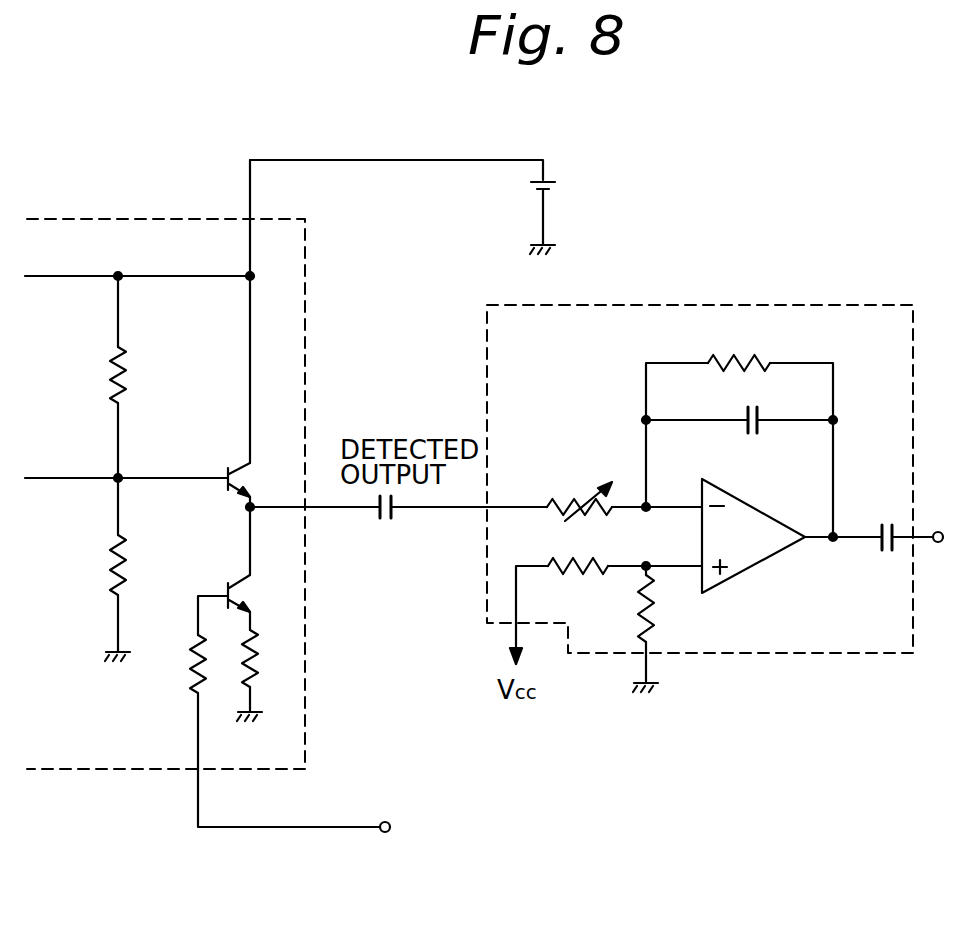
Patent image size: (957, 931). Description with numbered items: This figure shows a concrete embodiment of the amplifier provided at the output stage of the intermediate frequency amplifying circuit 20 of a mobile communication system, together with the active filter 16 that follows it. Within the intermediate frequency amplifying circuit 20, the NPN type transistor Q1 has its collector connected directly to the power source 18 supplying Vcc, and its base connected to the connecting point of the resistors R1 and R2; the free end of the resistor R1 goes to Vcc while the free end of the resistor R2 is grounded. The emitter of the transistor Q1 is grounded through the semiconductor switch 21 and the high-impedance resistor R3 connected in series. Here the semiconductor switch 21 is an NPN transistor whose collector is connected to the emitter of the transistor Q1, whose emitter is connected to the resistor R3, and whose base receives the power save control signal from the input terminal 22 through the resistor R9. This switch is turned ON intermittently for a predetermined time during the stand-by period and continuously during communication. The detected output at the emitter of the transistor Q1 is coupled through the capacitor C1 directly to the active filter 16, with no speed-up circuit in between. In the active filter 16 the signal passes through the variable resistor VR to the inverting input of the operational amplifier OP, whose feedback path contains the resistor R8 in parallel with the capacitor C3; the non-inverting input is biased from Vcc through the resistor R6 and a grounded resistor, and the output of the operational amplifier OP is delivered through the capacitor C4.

The active filter 16 is at (680, 305).
The power source 18 is at (550, 170).
The intermediate frequency amplifying circuit 20 is at (92, 218).
The semiconductor switch 21 is at (235, 585).
The input terminal 22 is at (380, 822).
The resistor R1 is at (139, 375).
The resistor R2 is at (139, 565).
The resistor R3 is at (269, 658).
The resistor R6 is at (578, 586).
The resistor R8 is at (739, 346).
The resistor R9 is at (177, 664).
The NPN type transistor Q1 is at (227, 465).
The capacitor C1 is at (387, 526).
The capacitor C3 is at (757, 438).
The capacitor C4 is at (885, 521).
The variable resistor VR is at (579, 487).
The operational amplifier OP is at (748, 570).